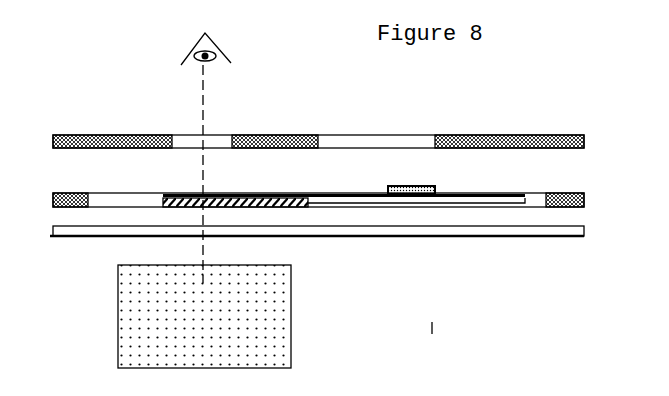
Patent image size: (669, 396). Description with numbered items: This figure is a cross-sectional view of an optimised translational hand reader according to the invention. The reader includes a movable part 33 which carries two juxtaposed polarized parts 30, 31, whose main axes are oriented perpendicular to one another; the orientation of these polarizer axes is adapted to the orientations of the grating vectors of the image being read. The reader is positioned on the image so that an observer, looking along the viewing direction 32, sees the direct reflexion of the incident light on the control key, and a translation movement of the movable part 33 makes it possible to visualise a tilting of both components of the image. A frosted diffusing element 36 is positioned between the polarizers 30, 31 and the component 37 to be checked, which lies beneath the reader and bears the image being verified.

The polarized part 30 is at (183, 207).
The polarized part 31 is at (216, 207).
The viewing axis 32 is at (212, 128).
The movable part 33 is at (400, 194).
The frosted diffusing element 36 is at (510, 236).
The component to be checked 37 is at (212, 325).